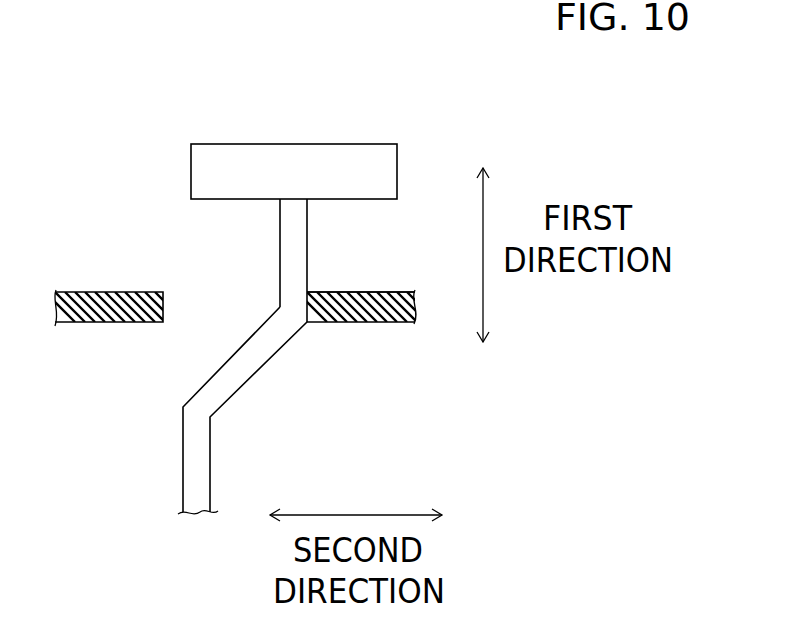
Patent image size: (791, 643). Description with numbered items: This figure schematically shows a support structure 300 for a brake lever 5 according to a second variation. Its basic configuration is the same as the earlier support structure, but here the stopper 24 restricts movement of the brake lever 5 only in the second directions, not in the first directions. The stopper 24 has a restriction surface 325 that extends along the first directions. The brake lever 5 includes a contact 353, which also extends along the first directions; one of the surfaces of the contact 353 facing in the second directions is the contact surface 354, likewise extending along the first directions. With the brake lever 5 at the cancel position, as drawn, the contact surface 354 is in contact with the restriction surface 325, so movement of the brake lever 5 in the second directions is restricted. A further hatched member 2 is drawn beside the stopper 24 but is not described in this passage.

The support structure 300 is at (115, 135).
The substrate 2 is at (115, 292).
The contact 353 is at (280, 277).
The restriction surface 325 is at (305, 310).
The contact surface 354 is at (323, 293).
The stopper 24 is at (368, 323).
The brake lever 5 is at (215, 457).